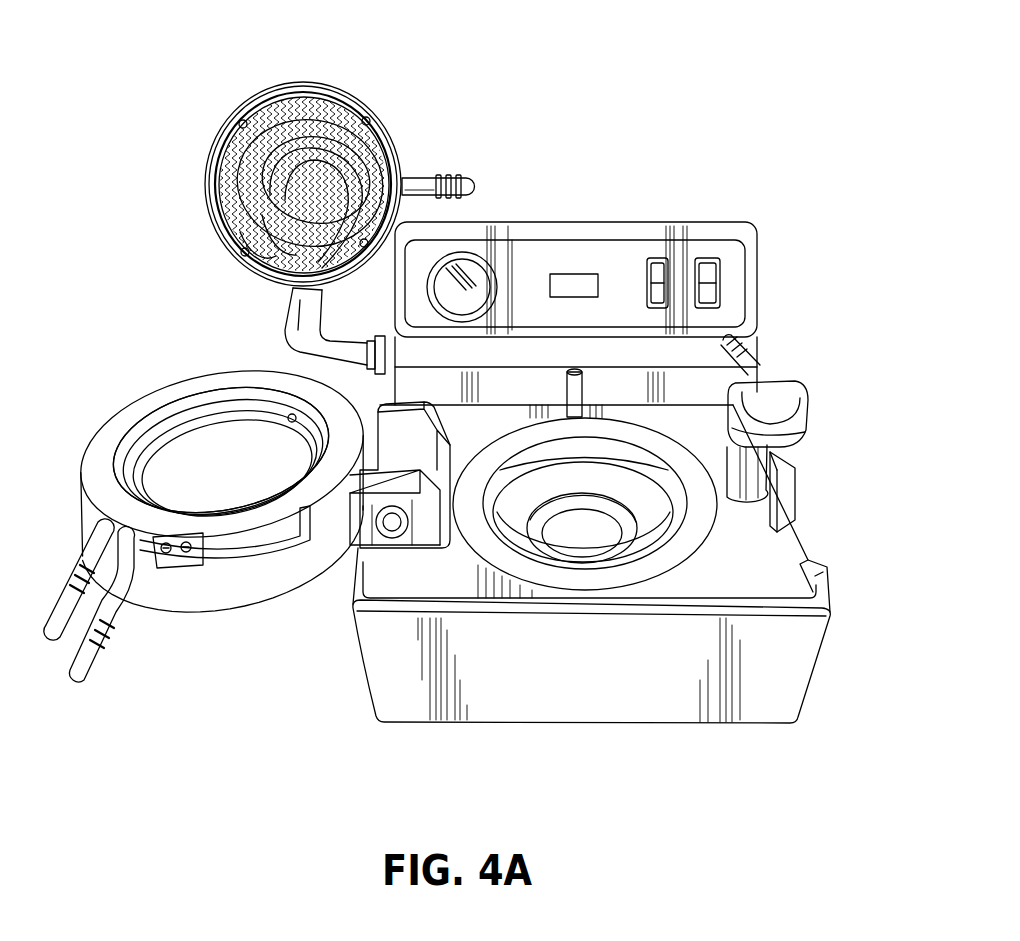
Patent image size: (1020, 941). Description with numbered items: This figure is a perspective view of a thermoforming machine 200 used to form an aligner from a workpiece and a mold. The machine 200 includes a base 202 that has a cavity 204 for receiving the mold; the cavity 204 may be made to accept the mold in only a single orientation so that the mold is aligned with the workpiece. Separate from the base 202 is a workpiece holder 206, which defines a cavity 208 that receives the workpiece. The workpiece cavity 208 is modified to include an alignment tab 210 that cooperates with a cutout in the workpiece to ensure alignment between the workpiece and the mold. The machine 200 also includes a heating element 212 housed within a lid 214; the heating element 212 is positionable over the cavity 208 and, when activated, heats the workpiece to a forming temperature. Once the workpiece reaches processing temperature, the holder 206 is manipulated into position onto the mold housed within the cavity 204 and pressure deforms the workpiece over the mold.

The thermoforming machine 200 is at (760, 232).
The base 202 is at (717, 723).
The cavity 204 is at (633, 555).
The workpiece holder 206 is at (203, 603).
The cavity 208 is at (150, 453).
The alignment tab 210 is at (292, 422).
The heating element 212 is at (337, 130).
The lid 214 is at (405, 168).